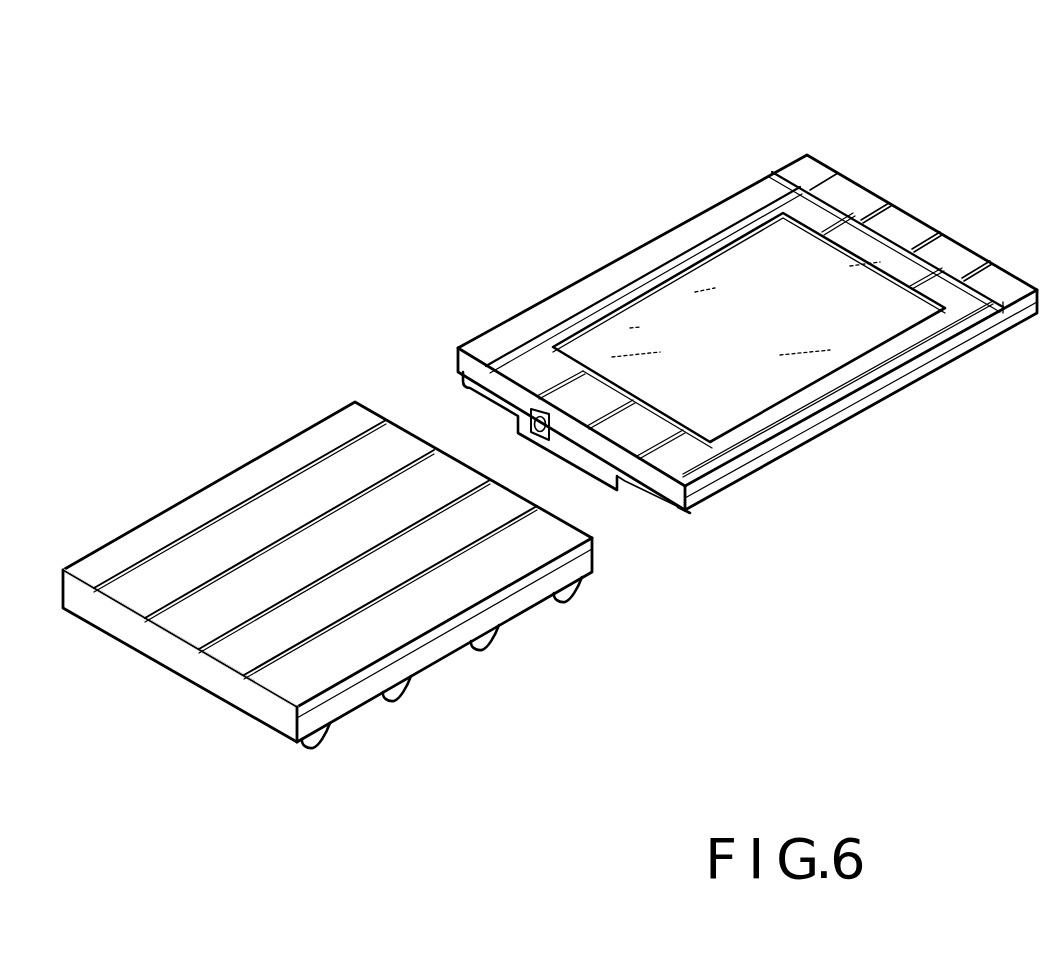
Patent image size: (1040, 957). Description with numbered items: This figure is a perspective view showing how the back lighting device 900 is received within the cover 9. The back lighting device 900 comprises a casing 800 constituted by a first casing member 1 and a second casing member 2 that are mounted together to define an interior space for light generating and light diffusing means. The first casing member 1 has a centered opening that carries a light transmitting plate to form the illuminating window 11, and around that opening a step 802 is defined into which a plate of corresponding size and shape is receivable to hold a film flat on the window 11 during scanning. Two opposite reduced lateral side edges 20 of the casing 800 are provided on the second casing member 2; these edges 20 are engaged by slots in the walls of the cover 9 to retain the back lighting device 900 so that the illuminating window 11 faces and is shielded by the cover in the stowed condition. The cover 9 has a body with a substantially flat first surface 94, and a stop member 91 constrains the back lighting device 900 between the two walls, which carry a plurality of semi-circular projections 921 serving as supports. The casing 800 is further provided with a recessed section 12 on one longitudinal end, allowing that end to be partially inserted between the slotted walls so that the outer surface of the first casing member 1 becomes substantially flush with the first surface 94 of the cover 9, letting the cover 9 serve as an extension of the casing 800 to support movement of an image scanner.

The back lighting device 900 is at (905, 118).
The casing 800 is at (740, 164).
The step 802 is at (680, 272).
The recessed section 12 is at (918, 228).
The first casing member 1 is at (550, 310).
The second casing member 2 is at (475, 390).
The illuminating window 11 is at (847, 350).
The reduced lateral side edges 20 is at (683, 512).
The cover 9 is at (217, 458).
The first surface 94 is at (323, 433).
The stop member 91 is at (205, 684).
The semi-circular projections 921 is at (325, 742).